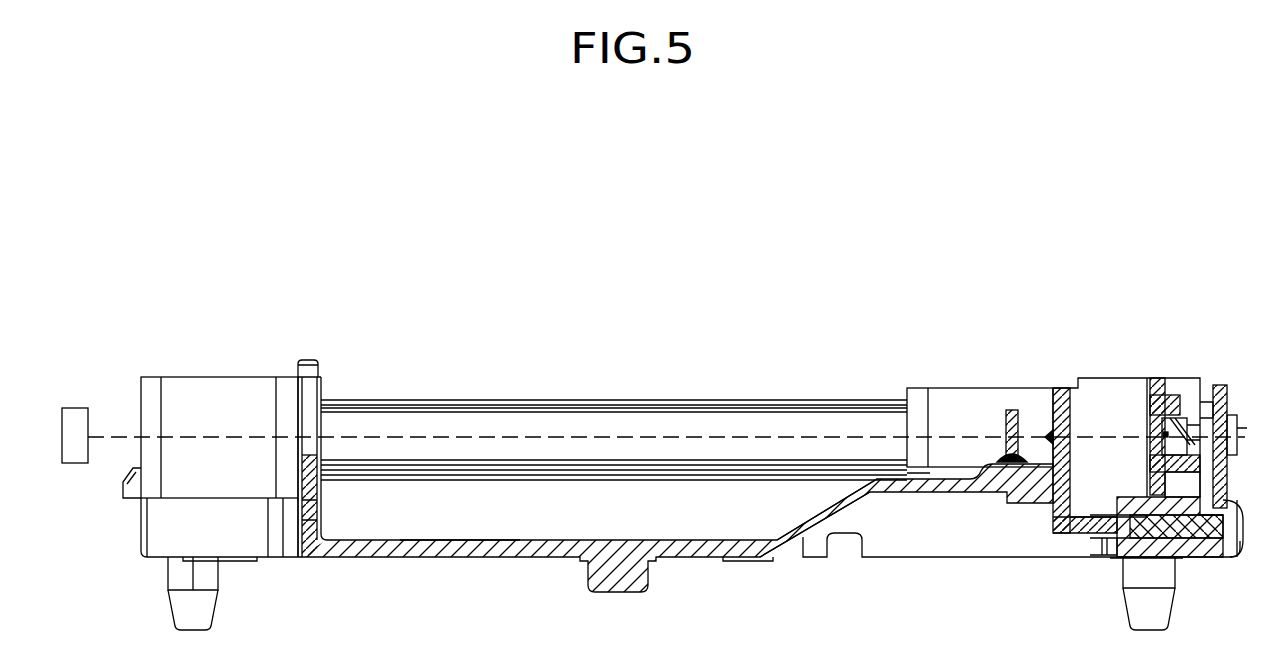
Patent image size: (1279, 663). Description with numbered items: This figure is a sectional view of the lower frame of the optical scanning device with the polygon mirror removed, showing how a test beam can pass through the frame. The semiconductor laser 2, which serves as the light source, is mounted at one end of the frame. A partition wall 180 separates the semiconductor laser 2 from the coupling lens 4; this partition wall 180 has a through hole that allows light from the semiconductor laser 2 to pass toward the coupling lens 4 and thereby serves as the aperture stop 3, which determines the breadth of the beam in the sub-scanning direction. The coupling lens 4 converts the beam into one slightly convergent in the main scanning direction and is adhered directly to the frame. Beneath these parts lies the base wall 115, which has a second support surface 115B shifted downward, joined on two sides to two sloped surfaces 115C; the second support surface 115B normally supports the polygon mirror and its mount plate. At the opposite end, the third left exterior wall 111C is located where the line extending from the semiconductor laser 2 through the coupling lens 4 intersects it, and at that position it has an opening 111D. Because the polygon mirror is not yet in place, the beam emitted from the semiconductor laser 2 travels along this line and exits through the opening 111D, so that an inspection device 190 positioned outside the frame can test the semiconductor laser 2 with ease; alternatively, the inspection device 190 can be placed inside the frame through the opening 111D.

The inspection device 190 is at (75, 410).
The opening 111D is at (300, 456).
The third left exterior wall 111C is at (312, 499).
The base wall 115 is at (683, 550).
The second support surface 115B is at (456, 542).
The sloped surfaces 115C is at (800, 548).
The coupling lens 4 is at (1013, 410).
The aperture stop 3 is at (1050, 430).
The partition wall 180 is at (1058, 403).
The semiconductor laser 2 is at (1183, 420).